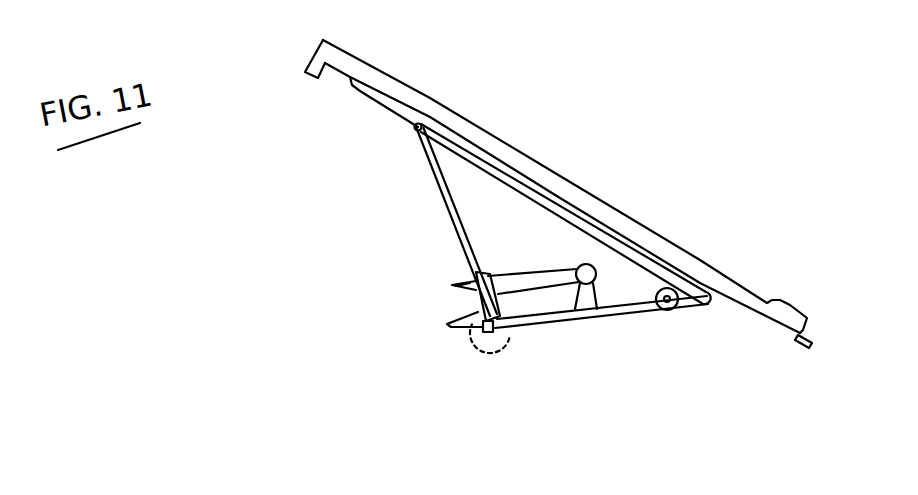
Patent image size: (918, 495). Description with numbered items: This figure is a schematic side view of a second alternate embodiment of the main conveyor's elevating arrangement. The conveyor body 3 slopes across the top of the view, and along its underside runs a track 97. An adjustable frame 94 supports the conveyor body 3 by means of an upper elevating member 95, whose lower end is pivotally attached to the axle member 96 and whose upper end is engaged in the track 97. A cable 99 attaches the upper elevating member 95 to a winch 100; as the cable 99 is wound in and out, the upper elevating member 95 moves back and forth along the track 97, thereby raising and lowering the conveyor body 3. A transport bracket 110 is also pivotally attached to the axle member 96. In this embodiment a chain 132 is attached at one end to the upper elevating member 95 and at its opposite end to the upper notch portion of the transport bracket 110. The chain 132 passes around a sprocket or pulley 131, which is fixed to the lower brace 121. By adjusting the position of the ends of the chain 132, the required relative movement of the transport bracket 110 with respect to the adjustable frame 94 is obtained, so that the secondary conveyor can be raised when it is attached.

The conveyor body 3 is at (580, 192).
The cable 99 is at (613, 257).
The track 97 is at (397, 112).
The adjustable frame 94 is at (447, 240).
The upper elevating member 95 is at (437, 195).
The axle member 96 is at (485, 348).
The transport bracket 110 is at (500, 307).
The chain 132 is at (505, 275).
The sprocket or pulley 131 is at (597, 270).
The lower brace 121 is at (593, 310).
The winch 100 is at (652, 306).